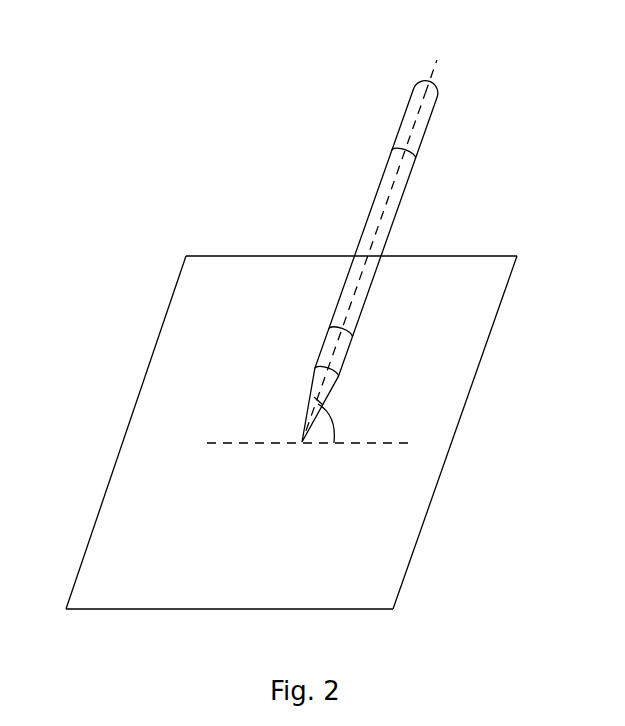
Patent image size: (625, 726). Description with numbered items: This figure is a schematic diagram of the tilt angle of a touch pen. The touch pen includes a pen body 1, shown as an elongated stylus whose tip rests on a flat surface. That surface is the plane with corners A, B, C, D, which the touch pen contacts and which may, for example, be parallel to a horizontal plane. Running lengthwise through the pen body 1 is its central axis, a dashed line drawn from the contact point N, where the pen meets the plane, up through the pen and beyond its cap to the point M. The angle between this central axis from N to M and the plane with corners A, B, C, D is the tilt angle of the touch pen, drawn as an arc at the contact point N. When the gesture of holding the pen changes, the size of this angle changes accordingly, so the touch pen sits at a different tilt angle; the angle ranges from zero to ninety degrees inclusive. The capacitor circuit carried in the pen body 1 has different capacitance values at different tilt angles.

The pen body 1 is at (422, 135).
The point A of plane ABCD A is at (341, 241).
The point B of plane ABCD B is at (117, 446).
The point C of plane ABCD C is at (240, 622).
The point D of plane ABCD D is at (467, 418).
The point M of central axis NM M is at (440, 60).
The point N of central axis NM N is at (307, 459).